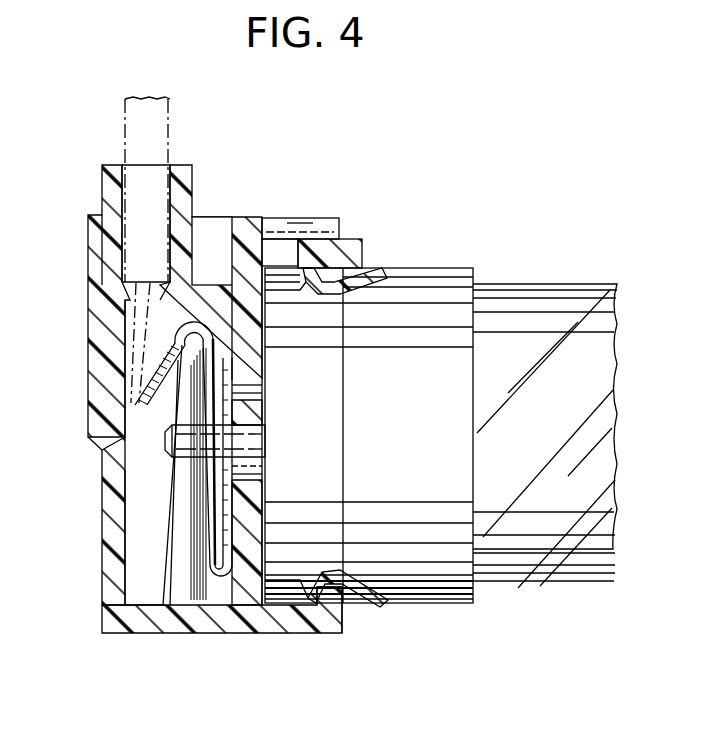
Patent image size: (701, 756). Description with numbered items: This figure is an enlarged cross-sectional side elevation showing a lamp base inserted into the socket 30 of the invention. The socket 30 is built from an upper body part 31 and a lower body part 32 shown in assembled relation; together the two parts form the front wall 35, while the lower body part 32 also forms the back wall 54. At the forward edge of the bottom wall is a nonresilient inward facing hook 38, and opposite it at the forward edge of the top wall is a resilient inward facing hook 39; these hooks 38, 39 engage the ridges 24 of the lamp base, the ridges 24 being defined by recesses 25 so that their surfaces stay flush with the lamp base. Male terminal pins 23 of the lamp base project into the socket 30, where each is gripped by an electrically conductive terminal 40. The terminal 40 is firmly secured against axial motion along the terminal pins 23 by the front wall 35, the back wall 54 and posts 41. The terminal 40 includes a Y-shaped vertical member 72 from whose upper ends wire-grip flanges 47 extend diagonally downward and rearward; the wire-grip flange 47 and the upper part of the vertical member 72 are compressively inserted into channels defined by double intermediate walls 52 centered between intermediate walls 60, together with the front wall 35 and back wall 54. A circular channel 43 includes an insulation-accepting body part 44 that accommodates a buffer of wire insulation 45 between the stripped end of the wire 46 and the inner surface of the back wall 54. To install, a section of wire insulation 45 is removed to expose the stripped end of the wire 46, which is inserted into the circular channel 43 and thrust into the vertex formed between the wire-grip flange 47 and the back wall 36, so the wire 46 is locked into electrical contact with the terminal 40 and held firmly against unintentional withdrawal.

The male terminal pins 23 is at (162, 433).
The ridges 24 is at (307, 283).
The recesses 25 is at (338, 279).
The socket 30 is at (184, 398).
The upper body part 31 is at (244, 216).
The lower body part 32 is at (128, 632).
The front wall 35 is at (251, 532).
The back wall 36 is at (98, 389).
The nonresilient inward facing hook 38 is at (334, 592).
The resilient inward facing hook 39 is at (346, 241).
The electrically conductive terminal 40 is at (220, 580).
The posts 41 is at (188, 478).
The circular channel 43 is at (121, 151).
The insulation-accepting body part 44 is at (118, 250).
The wire insulation 45 is at (136, 213).
The wire 46 is at (120, 373).
The wire-grip flange 47 is at (198, 365).
The double intermediate walls 52 is at (153, 496).
The back wall 54 is at (114, 260).
The intermediate walls 60 is at (145, 534).
The vertical member 72 is at (208, 538).